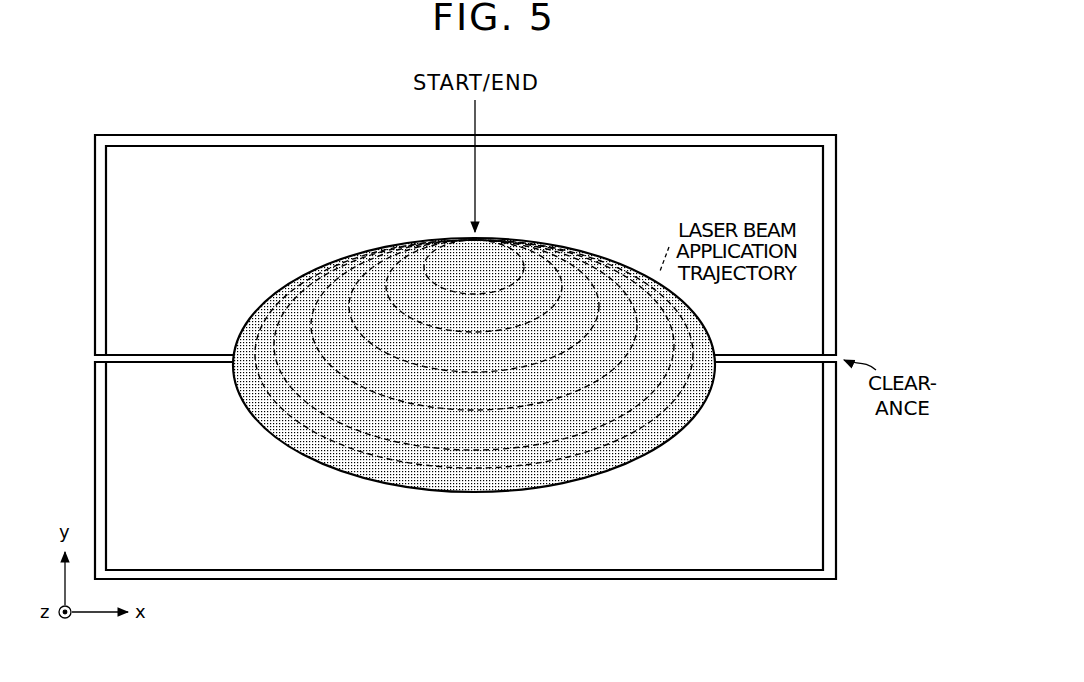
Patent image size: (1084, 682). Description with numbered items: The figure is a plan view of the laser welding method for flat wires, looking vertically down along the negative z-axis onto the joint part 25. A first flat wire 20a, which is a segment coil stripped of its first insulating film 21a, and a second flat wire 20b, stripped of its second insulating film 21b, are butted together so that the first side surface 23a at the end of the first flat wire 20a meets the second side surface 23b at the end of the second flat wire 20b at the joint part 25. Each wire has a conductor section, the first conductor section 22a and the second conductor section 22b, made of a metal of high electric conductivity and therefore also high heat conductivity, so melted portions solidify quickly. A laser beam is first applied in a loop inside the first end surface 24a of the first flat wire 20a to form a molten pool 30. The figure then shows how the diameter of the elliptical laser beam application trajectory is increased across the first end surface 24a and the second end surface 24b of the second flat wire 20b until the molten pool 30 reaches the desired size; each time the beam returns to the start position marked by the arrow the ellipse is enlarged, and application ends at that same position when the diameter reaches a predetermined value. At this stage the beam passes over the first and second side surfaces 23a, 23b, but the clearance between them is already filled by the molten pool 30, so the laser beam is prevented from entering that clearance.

The joint part 25 is at (861, 103).
The first flat wire 20a is at (843, 253).
The second flat wire 20b is at (843, 473).
The first insulating film 21a is at (760, 138).
The second insulating film 21b is at (757, 582).
The first conductor section 22a is at (702, 146).
The second conductor section 22b is at (697, 572).
The first side surface 23a is at (765, 354).
The second side surface 23b is at (752, 365).
The first end surface 24a is at (626, 165).
The second end surface 24b is at (621, 550).
The molten pool 30 is at (345, 258).